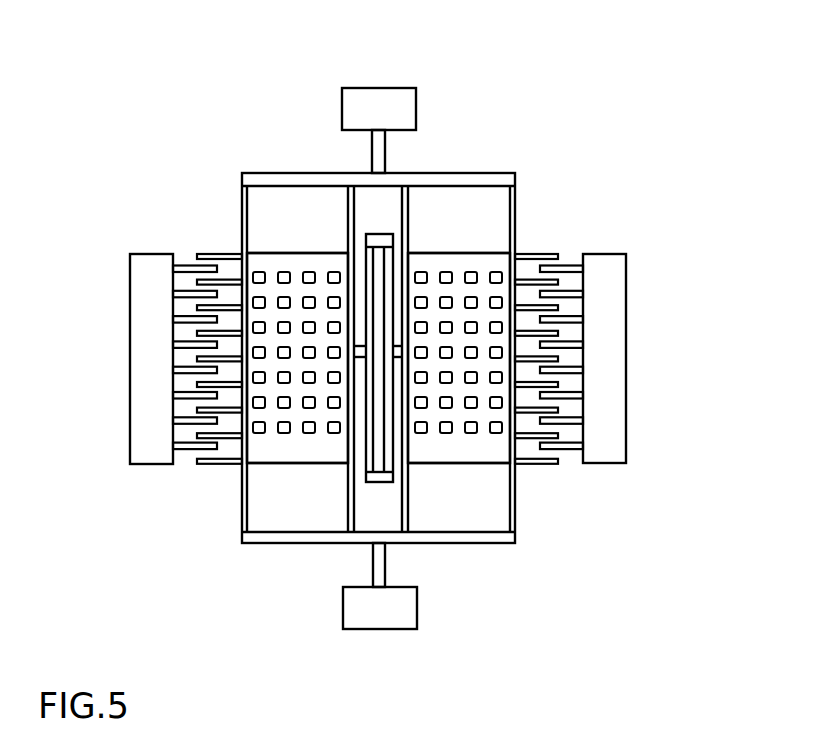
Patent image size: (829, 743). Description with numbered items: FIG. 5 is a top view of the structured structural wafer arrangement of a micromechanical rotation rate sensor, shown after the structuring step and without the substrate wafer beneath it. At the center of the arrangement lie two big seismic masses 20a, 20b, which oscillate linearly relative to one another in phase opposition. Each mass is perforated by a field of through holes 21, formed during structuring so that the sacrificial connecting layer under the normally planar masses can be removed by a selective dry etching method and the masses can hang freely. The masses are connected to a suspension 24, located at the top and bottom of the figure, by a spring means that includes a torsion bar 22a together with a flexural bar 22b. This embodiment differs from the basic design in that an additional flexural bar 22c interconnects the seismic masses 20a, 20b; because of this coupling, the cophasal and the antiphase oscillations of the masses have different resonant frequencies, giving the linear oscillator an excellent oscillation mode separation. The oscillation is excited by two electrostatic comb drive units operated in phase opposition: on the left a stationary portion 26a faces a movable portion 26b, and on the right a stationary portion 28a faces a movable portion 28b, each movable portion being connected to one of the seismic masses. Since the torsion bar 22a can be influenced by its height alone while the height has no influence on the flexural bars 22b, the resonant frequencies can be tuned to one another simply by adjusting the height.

The seismic mass 20a is at (495, 452).
The seismic mass 20b is at (278, 455).
The through holes 21 is at (283, 272).
The torsion bar 22a is at (385, 150).
The flexural bar 22b is at (515, 213).
The flexural bar 22c is at (393, 432).
The suspension 24 is at (382, 87).
The stationary portion 26a is at (130, 334).
The movable portion 26b is at (220, 253).
The stationary portion 28a is at (626, 334).
The movable portion 28b is at (558, 254).